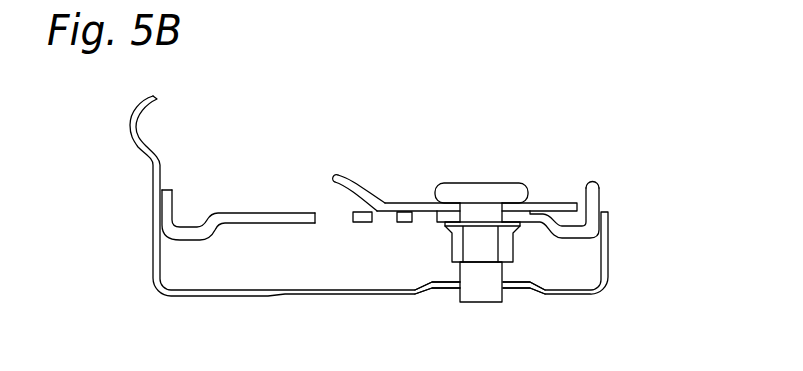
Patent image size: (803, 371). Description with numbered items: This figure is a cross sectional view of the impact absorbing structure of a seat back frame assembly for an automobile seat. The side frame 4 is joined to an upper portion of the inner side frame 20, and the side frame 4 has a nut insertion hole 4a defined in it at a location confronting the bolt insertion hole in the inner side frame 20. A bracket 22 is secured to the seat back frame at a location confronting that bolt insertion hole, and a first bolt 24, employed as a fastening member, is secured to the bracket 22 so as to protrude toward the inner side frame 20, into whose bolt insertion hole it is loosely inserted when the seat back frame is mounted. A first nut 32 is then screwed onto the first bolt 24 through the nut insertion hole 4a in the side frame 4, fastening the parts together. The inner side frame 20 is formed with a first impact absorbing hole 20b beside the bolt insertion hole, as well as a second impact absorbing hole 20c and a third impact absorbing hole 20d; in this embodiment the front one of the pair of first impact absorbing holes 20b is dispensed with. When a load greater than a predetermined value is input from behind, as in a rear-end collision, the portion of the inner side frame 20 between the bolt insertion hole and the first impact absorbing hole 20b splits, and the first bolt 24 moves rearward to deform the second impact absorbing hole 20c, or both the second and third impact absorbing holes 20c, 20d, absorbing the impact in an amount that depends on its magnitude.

The side frame 4 is at (255, 298).
The nut insertion hole 4a is at (448, 296).
The inner side frame 20 is at (601, 197).
The first impact absorbing hole 20b is at (430, 220).
The second impact absorbing hole 20c is at (388, 220).
The third impact absorbing hole 20d is at (338, 220).
The bracket 22 is at (560, 200).
The first bolt 24 is at (485, 183).
The first nut 32 is at (513, 245).